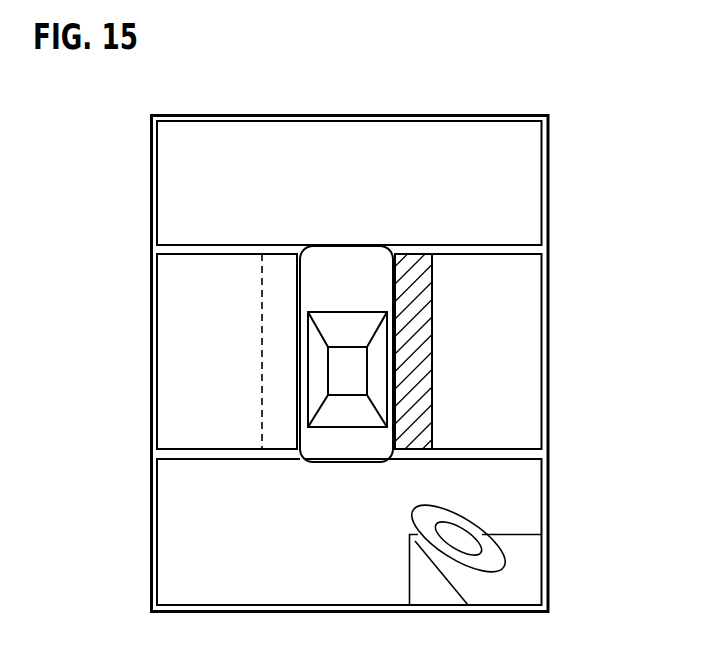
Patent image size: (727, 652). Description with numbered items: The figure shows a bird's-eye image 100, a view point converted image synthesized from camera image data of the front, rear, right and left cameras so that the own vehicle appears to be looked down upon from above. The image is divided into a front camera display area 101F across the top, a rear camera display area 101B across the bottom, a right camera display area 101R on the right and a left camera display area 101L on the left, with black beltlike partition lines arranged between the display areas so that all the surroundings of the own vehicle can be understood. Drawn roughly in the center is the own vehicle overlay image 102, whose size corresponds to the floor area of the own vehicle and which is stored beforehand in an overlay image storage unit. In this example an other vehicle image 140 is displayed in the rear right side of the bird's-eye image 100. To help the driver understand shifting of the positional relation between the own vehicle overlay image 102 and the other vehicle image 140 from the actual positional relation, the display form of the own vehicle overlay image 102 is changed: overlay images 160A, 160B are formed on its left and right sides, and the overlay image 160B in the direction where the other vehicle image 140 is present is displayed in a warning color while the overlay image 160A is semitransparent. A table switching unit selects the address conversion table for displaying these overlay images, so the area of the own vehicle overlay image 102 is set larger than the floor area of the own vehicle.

The bird's-eye image 100 is at (343, 108).
The front camera display area 101F is at (525, 142).
The right camera display area 101R is at (523, 272).
The left camera display area 101L is at (168, 410).
The rear camera display area 101B is at (165, 528).
The own vehicle overlay image 102 is at (315, 287).
The semitransparent overlay image 160A is at (280, 265).
The warning color overlay image 160B is at (412, 262).
The other vehicle image 140 is at (523, 554).